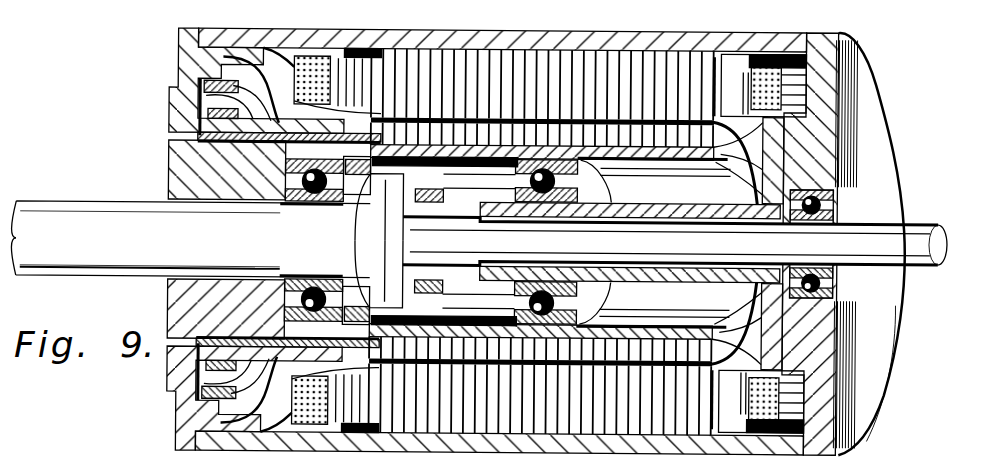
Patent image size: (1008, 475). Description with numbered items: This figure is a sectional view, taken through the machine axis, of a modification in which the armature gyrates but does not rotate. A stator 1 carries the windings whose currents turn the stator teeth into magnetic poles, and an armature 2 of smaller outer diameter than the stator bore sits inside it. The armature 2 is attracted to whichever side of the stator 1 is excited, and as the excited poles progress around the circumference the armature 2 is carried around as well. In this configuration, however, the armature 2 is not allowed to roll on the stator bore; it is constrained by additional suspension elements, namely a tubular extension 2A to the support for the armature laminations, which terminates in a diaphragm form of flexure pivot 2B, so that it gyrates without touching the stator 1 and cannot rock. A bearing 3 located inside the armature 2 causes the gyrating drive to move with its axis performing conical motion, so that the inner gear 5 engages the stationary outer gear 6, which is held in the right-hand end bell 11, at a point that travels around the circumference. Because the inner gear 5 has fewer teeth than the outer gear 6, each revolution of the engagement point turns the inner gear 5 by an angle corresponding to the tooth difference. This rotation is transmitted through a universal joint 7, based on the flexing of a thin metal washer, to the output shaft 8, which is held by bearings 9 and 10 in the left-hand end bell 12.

The stator 1 is at (663, 88).
The armature 2 is at (648, 345).
The tubular extension 2A is at (290, 412).
The diaphragm form of flexure pivot 2B is at (190, 90).
The bearing 3 is at (570, 300).
The inner gear 5 is at (783, 345).
The outer gear 6 is at (756, 350).
The universal joint 7 is at (413, 293).
The shaft 8 is at (81, 223).
The bearing 9 is at (297, 205).
The bearing 10 is at (828, 300).
The right-hand end bell 11 is at (822, 146).
The left-hand end bell 12 is at (178, 165).